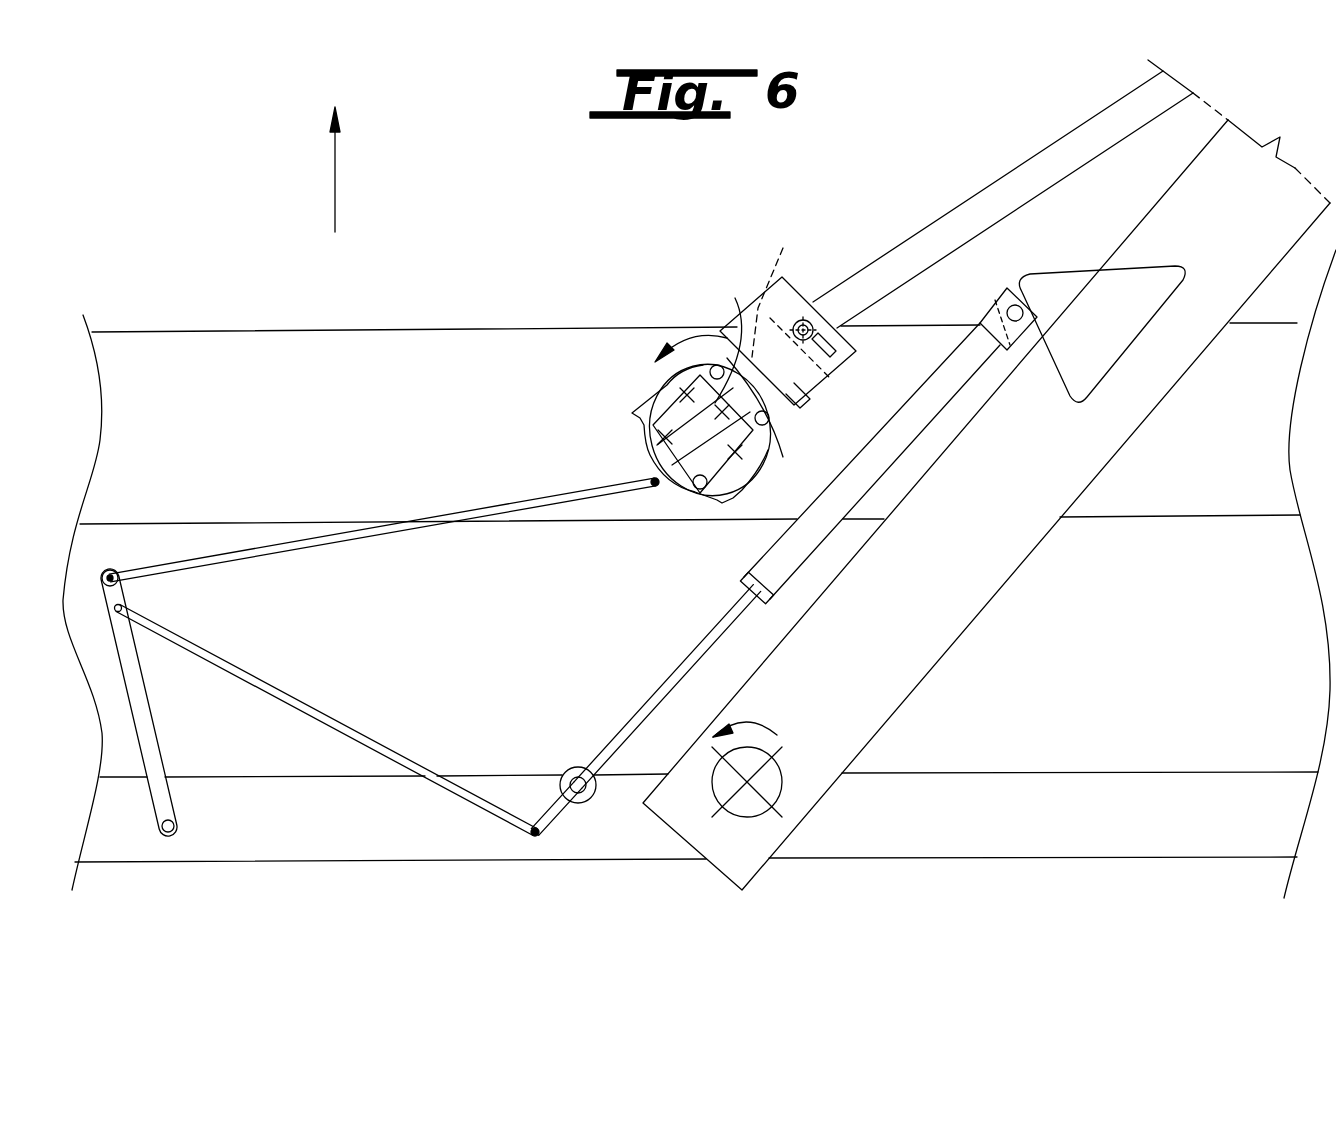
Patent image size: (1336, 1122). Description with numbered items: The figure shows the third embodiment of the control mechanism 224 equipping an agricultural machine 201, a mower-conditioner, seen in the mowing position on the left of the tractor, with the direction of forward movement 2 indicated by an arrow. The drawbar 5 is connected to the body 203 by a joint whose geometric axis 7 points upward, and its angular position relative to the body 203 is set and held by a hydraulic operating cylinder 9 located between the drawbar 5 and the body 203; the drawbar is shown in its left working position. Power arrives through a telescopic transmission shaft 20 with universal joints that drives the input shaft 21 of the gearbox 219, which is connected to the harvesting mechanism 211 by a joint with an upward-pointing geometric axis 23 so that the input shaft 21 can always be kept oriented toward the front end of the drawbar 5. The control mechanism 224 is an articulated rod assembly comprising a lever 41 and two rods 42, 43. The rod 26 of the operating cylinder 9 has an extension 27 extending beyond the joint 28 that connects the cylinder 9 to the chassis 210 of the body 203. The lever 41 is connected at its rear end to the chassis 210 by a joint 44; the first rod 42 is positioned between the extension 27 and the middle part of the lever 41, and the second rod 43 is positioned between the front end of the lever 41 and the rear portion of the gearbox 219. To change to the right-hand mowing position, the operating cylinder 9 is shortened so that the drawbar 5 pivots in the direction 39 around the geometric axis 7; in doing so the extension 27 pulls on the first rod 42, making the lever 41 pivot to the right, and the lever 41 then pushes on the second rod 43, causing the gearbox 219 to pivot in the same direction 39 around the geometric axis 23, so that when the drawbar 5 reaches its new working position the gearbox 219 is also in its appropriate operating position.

The direction of forward movement 2 is at (335, 200).
The drawbar 5 is at (1009, 560).
The geometric axis 7 is at (747, 782).
The hydraulic operating cylinder 9 is at (660, 655).
The telescopic transmission shaft 20 is at (966, 205).
The input shaft 21 is at (781, 287).
The geometric axis 23 is at (744, 393).
The rod 26 is at (622, 732).
The extension 27 is at (555, 815).
The joint 28 is at (572, 778).
The direction 39 is at (705, 338).
The lever 41 is at (158, 758).
The first rod 42 is at (343, 726).
The second rod 43 is at (357, 538).
The joint 44 is at (180, 827).
The agricultural machine 201 is at (522, 245).
The body 203 is at (1218, 688).
The chassis 210 is at (1177, 789).
The harvesting mechanism 211 is at (165, 315).
The gearbox 219 is at (744, 361).
The control mechanism 224 is at (470, 492).